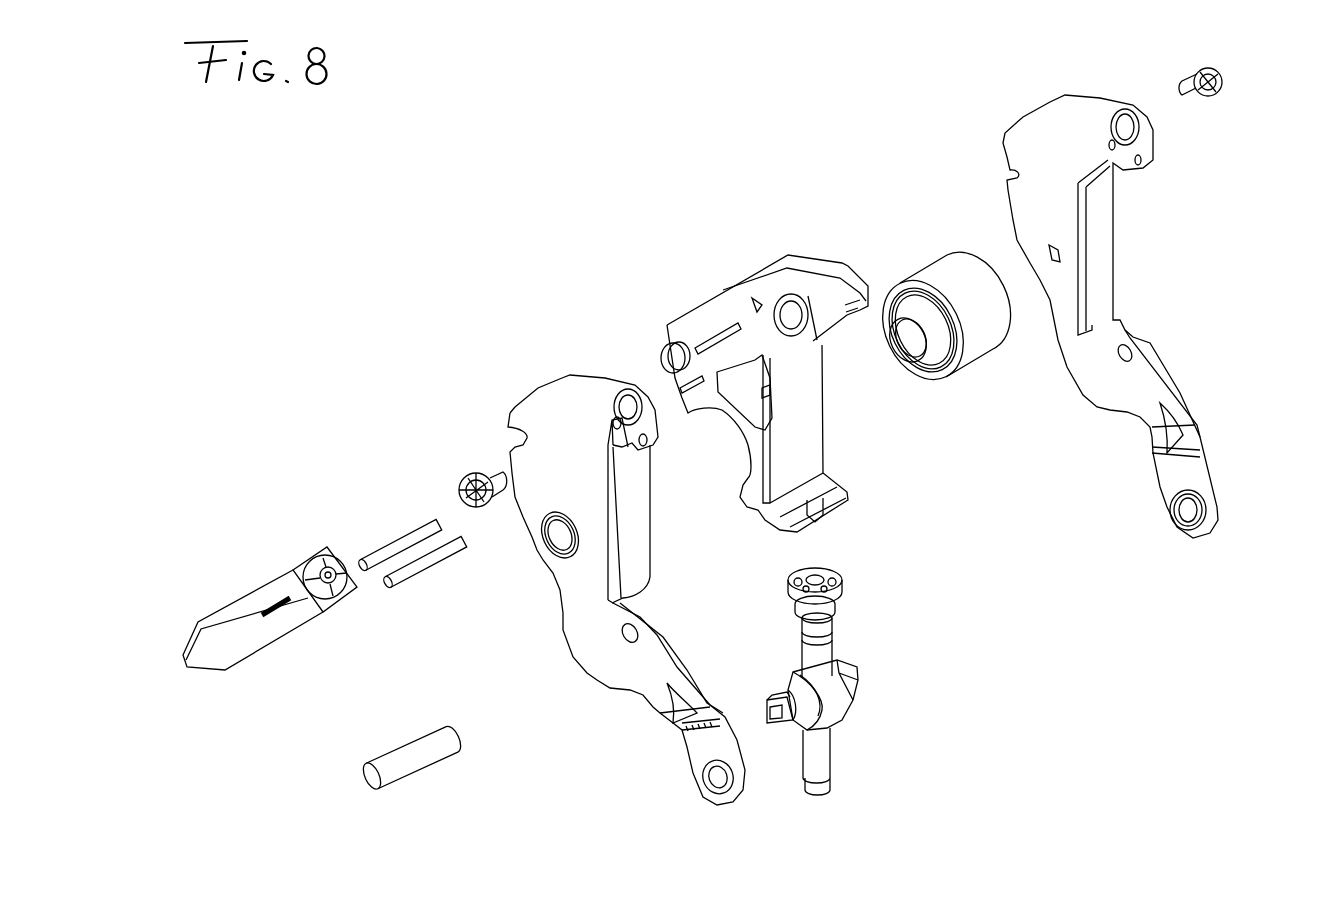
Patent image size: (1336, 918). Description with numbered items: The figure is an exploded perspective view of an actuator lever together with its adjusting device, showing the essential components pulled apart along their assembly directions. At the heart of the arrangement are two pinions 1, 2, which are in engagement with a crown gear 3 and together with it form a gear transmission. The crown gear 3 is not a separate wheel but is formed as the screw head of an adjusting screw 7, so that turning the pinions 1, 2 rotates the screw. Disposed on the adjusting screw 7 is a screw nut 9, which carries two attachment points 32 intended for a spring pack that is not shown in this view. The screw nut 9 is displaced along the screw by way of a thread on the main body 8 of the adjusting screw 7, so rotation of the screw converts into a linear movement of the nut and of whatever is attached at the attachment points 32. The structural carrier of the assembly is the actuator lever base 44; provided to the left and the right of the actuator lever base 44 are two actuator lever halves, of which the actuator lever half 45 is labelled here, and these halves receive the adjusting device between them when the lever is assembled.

The pinion 1 is at (462, 470).
The pinion 2 is at (1228, 80).
The crown gear 3 is at (828, 585).
The adjusting screw 7 is at (820, 648).
The main body of the adjusting screw 8 is at (818, 755).
The screw nut 9 is at (835, 709).
The attachment points 32 is at (855, 680).
The actuator lever base 44 is at (732, 307).
The actuator lever half 45 is at (563, 423).